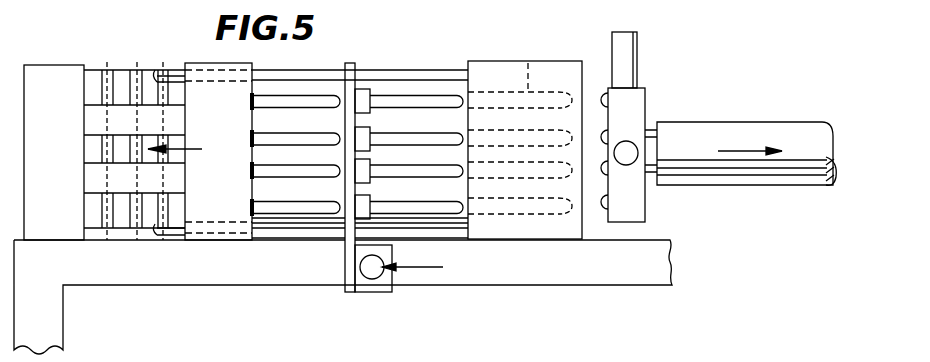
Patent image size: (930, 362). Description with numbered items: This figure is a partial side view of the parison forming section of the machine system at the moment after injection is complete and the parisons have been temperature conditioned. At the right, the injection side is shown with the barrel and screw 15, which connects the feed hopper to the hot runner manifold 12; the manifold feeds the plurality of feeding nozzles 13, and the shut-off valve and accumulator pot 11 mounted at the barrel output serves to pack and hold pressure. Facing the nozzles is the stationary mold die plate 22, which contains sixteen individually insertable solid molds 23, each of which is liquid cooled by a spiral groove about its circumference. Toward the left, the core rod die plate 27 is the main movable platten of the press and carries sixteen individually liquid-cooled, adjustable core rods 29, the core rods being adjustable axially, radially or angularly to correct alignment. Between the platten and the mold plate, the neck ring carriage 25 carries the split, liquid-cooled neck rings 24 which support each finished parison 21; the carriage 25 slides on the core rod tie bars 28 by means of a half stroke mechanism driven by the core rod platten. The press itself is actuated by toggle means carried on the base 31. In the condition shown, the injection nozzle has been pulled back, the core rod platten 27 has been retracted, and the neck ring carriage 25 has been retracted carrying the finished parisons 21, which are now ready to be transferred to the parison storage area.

The shut-off valve and accumulator pot 11 is at (626, 153).
The hot runner manifold 12 is at (648, 97).
The feeding nozzles 13 is at (605, 93).
The barrel and screw 15 is at (742, 128).
The parison 21 is at (405, 100).
The stationary mold die plate 22 is at (514, 70).
The solid molds 23 is at (530, 63).
The neck rings 24 is at (370, 72).
The neck ring carriage 25 is at (357, 286).
The core rod die plate 27 is at (203, 62).
The core rod tie bars 28 is at (320, 73).
The core rods 29 is at (282, 100).
The base 31 is at (56, 76).